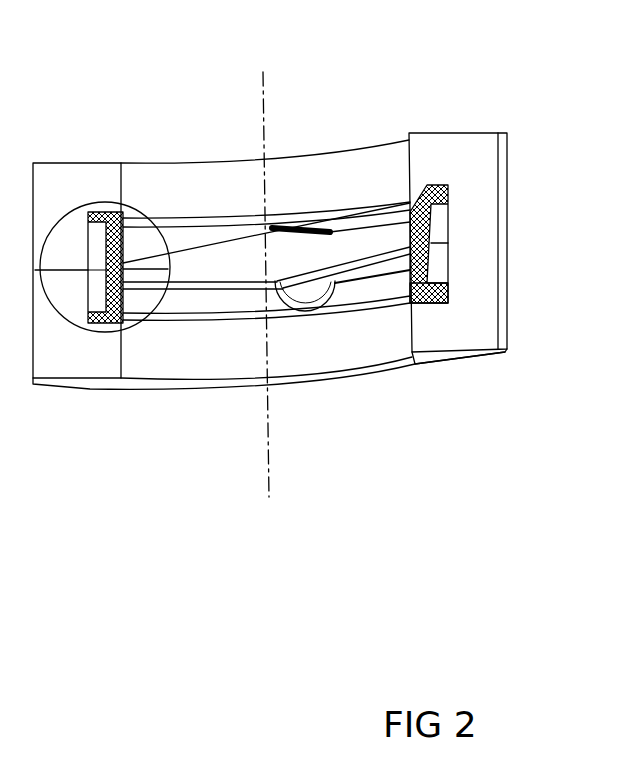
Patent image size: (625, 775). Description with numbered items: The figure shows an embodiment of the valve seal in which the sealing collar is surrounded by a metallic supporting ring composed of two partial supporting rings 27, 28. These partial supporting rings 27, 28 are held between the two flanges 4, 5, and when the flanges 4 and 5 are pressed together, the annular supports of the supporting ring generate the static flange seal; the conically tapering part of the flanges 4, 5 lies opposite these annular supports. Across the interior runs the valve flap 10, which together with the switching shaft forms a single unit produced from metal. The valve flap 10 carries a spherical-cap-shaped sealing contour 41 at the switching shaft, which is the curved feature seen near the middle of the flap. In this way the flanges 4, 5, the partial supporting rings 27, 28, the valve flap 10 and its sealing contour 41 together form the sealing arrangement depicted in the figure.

The flange 4 is at (472, 162).
The flange 5 is at (470, 307).
The valve flap 10 is at (232, 263).
The partial supporting ring 27 is at (437, 217).
The partial supporting ring 28 is at (437, 263).
The spherical-cap-shaped sealing contour 41 is at (295, 290).